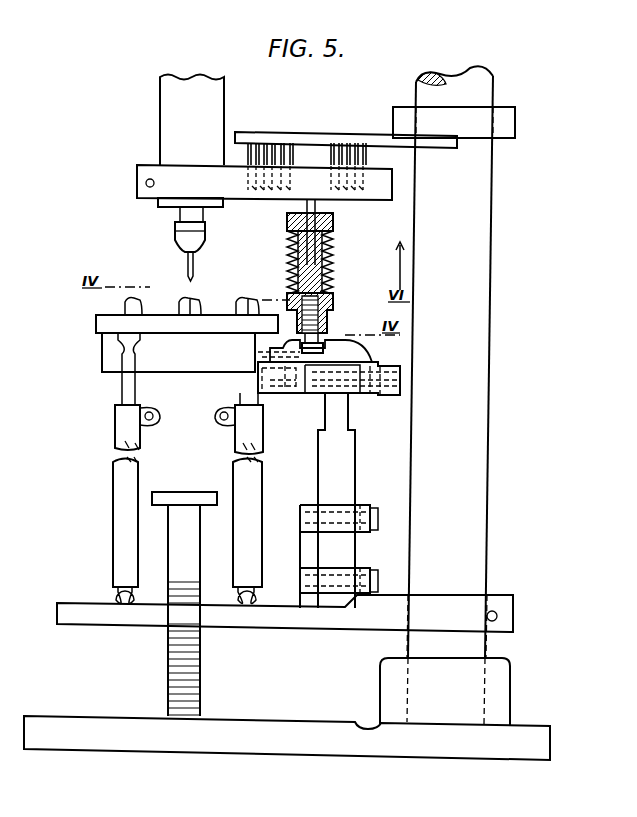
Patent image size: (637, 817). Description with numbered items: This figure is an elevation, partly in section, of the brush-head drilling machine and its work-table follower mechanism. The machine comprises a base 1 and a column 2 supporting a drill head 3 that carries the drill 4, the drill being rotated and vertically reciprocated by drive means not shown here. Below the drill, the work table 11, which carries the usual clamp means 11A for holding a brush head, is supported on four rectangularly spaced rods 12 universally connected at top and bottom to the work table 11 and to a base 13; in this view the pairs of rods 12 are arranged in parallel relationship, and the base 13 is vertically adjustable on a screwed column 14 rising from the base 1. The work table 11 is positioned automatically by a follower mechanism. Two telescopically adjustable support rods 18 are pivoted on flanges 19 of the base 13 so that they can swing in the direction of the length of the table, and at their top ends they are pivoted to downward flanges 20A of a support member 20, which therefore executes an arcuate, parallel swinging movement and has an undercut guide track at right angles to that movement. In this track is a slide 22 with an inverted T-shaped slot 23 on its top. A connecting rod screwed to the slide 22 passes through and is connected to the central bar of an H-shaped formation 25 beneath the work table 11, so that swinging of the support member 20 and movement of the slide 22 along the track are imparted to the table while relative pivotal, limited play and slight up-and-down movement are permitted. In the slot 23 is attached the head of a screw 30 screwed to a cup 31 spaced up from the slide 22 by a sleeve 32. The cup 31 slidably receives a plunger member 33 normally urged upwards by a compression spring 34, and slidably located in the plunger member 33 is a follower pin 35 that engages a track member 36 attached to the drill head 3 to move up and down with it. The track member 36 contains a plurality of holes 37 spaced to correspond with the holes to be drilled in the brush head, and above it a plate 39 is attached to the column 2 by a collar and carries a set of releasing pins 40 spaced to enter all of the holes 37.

The base 1 is at (505, 752).
The column 2 is at (445, 519).
The drill head 3 is at (178, 135).
The drill 4 is at (186, 268).
The work table 11 is at (110, 328).
The clamp means 11A is at (138, 308).
The rods 12 is at (240, 445).
The base 13 is at (318, 624).
The screwed column 14 is at (190, 566).
The support rods 18 is at (350, 425).
The flanges 19 is at (340, 545).
The support member 20 is at (392, 372).
The downward flanges 20A is at (365, 392).
The slide 22 is at (345, 352).
The slot 23 is at (325, 350).
The H-shaped formation 25 is at (160, 366).
The screw 30 is at (330, 308).
The cup 31 is at (328, 282).
The sleeve 32 is at (292, 305).
The plunger member 33 is at (315, 264).
The compression spring 34 is at (290, 238).
The follower pin 35 is at (322, 218).
The track member 36 is at (375, 192).
The holes 37 is at (372, 178).
The plate 39 is at (300, 135).
The releasing pins 40 is at (345, 152).